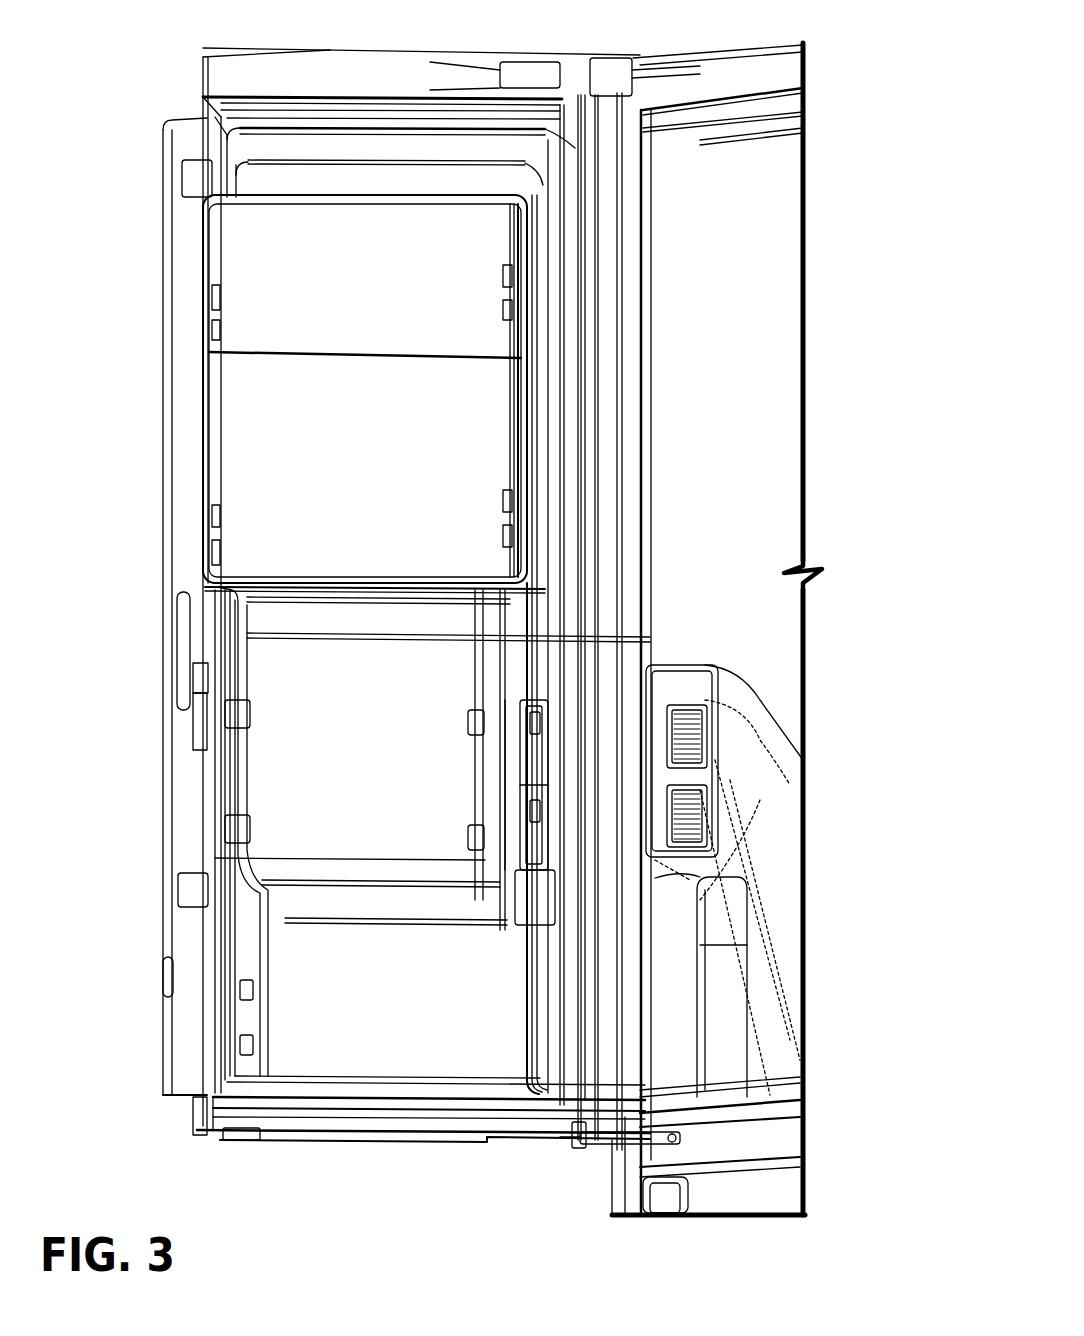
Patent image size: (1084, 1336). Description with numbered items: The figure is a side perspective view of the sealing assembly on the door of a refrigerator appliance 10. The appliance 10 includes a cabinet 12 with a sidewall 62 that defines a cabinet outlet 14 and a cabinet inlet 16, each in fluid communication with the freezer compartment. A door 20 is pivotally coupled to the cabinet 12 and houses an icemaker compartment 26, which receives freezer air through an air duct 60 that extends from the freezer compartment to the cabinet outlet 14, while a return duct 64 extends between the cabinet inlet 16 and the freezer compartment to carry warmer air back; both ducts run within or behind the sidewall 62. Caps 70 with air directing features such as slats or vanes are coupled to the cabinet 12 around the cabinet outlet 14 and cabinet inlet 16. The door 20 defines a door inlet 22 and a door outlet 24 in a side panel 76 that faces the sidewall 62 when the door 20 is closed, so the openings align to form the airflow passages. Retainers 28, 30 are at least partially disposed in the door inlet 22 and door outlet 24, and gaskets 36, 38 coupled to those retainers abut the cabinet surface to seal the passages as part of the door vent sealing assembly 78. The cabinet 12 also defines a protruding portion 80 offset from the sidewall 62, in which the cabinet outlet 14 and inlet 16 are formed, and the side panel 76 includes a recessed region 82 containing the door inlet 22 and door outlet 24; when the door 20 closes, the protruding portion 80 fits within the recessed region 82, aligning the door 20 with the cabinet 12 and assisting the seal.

The appliance 10 is at (840, 34).
The cabinet 12 is at (787, 97).
The cabinet outlet 14 is at (700, 740).
The cabinet inlet 16 is at (700, 807).
The door 20 is at (166, 202).
The door inlet 22 is at (545, 738).
The door outlet 24 is at (548, 855).
The icemaker compartment 26 is at (243, 408).
The retainer 28 is at (500, 737).
The retainer 30 is at (514, 855).
The gasket 36 is at (514, 735).
The gasket 38 is at (523, 817).
The air duct 60 is at (767, 803).
The sidewall 62 is at (735, 263).
The return duct 64 is at (735, 955).
The caps 70 is at (700, 727).
The side panel 76 is at (540, 505).
The door vent sealing assembly 78 is at (492, 775).
The protruding portion 80 is at (695, 690).
The recessed region 82 is at (533, 897).